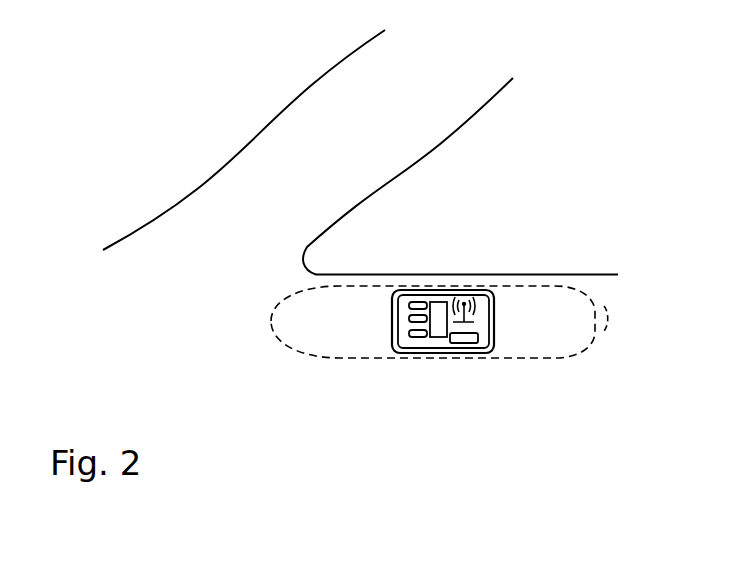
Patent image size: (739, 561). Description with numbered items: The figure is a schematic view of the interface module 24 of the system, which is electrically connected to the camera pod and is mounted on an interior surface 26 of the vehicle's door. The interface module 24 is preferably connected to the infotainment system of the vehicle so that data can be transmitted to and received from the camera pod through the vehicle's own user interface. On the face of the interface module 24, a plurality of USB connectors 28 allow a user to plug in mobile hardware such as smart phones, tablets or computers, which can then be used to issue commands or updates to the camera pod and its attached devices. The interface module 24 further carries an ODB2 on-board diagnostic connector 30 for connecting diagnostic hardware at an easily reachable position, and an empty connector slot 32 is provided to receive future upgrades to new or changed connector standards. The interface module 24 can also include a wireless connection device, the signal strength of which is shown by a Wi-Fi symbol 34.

The interface module 24 is at (496, 322).
The interior surface 26 is at (282, 263).
The USB connectors 28 is at (424, 301).
The ODB2 connector 30 is at (465, 342).
The empty connector slot 32 is at (432, 325).
The Wi-Fi symbol 34 is at (471, 299).